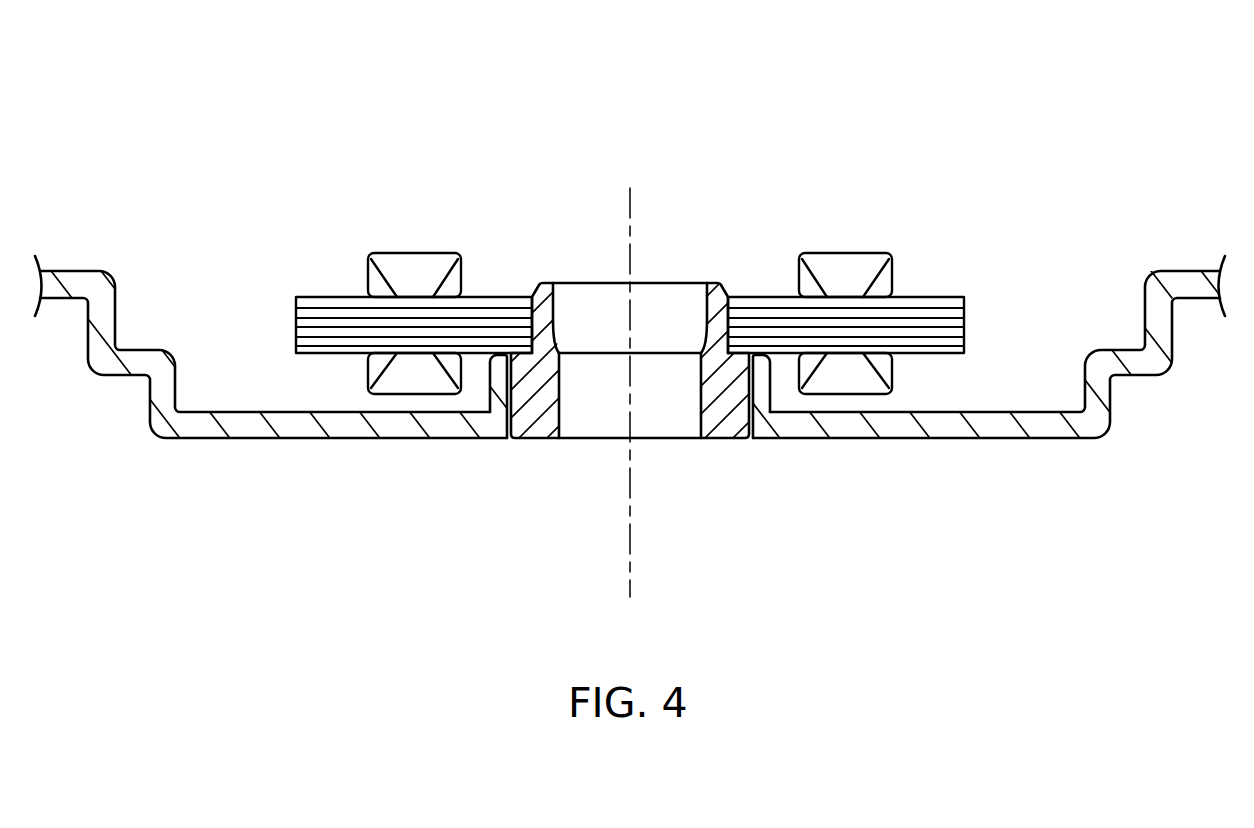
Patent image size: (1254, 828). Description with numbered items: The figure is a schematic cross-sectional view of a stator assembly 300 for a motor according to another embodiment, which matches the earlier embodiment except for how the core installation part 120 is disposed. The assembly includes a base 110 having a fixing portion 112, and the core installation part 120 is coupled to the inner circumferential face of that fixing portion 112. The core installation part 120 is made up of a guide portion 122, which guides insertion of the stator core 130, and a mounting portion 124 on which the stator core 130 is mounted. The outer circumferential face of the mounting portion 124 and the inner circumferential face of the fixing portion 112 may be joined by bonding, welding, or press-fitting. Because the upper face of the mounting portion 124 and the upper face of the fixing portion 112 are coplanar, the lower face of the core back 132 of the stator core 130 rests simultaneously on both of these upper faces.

The stator assembly 300 is at (644, 314).
The base 110 is at (892, 427).
The fixing portion 112 is at (762, 377).
The core installation part 120 is at (648, 281).
The guide portion 122 is at (716, 298).
The mounting portion 124 is at (740, 365).
The stator core 130 is at (611, 261).
The core back 132 is at (517, 312).